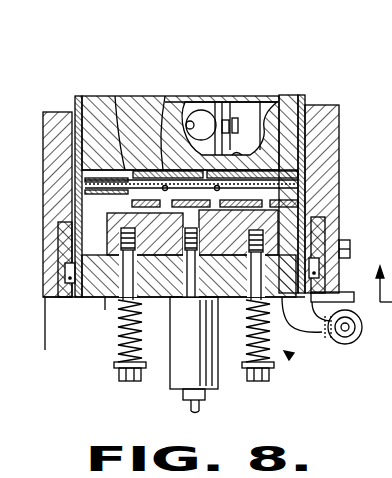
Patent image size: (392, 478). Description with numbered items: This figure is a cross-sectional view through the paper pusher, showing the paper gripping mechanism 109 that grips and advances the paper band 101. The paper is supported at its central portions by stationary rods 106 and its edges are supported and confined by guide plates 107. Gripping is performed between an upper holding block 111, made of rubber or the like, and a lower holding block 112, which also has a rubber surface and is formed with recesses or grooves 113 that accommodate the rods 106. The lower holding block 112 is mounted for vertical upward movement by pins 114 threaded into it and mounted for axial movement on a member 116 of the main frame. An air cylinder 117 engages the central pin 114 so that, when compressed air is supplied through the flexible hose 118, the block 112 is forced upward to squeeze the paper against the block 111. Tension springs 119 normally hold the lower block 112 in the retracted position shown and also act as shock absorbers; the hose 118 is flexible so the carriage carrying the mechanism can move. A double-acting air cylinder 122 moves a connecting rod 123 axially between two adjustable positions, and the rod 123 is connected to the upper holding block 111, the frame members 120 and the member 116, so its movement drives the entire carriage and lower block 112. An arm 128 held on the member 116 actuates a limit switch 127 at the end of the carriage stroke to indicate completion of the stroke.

The paper band 101 is at (230, 156).
The rods 106 is at (165, 96).
The guide plates 107 is at (85, 192).
The paper gripping mechanism 109 is at (289, 355).
The upper holding block 111 is at (115, 96).
The lower holding block 112 is at (251, 201).
The recesses or grooves 113 is at (163, 198).
The pins 114 is at (138, 298).
The member 116 is at (104, 299).
The air cylinder 117 is at (218, 378).
The hose 118 is at (201, 407).
The tension springs 119 is at (122, 346).
The frame members 120 is at (79, 96).
The air cylinder 122 is at (222, 102).
The connecting rod 123 is at (188, 122).
The limit switch 127 is at (362, 324).
The arm 128 is at (316, 330).